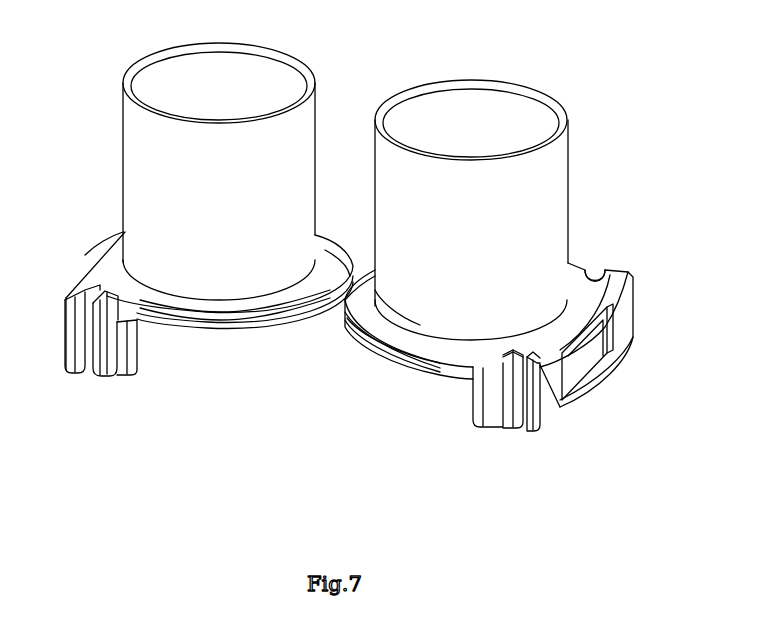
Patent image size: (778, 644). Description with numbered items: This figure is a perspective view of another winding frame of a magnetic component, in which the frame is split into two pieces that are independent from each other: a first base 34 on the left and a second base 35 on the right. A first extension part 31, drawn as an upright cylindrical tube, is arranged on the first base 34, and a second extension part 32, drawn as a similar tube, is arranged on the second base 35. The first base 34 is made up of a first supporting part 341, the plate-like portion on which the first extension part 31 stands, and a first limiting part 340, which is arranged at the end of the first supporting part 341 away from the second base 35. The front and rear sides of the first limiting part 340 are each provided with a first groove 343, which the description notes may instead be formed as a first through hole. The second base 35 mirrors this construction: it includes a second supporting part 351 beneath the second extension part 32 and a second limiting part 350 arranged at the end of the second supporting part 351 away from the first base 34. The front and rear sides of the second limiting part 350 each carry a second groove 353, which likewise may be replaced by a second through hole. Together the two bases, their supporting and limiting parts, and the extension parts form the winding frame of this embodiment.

The first extension part 31 is at (143, 143).
The second extension part 32 is at (545, 168).
The first base 34 is at (192, 366).
The first limiting part 340 is at (107, 275).
The first supporting part 341 is at (253, 310).
The first groove 343 is at (87, 380).
The second base 35 is at (425, 381).
The second limiting part 350 is at (567, 328).
The second supporting part 351 is at (388, 326).
The second groove 353 is at (607, 263).